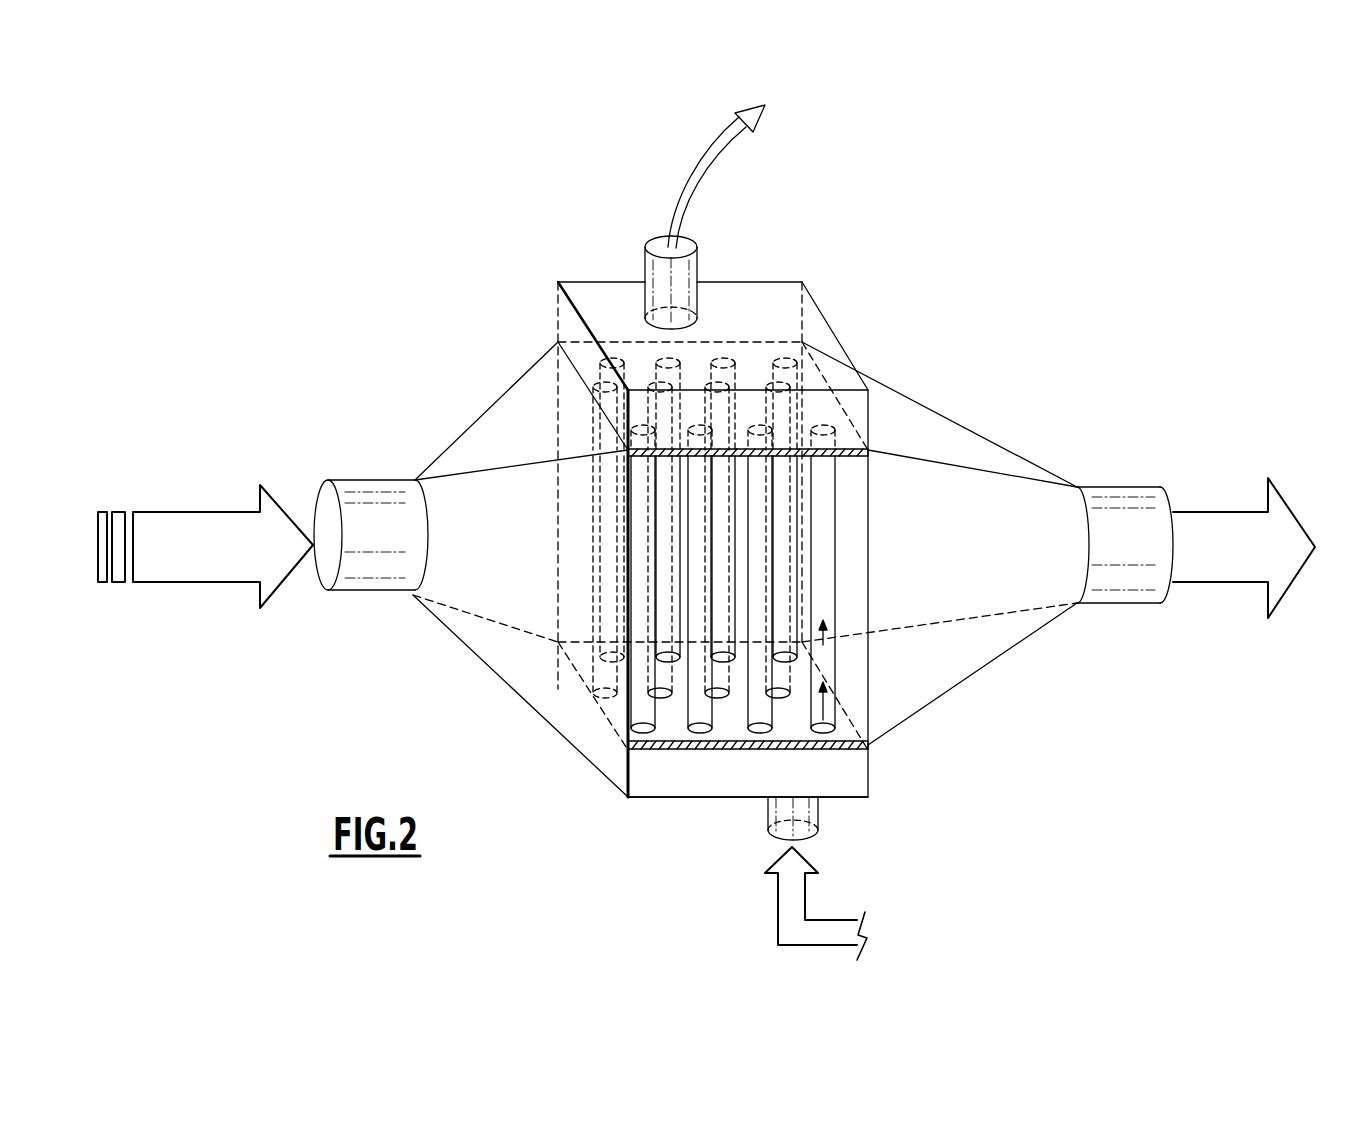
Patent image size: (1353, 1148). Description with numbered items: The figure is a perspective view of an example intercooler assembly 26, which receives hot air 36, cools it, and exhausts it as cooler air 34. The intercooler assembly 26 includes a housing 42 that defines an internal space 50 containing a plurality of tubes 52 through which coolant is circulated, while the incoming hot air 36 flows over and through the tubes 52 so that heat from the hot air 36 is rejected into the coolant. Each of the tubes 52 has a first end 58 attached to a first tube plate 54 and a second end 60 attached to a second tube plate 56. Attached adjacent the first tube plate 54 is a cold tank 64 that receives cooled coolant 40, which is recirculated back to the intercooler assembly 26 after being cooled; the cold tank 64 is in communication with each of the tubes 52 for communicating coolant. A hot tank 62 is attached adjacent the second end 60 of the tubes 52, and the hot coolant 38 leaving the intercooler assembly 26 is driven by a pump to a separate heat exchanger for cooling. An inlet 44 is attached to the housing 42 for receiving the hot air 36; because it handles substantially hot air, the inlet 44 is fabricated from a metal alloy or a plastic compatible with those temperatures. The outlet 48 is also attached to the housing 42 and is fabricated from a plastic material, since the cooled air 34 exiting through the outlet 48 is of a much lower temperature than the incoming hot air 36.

The intercooler assembly 26 is at (996, 212).
The cooler air 34 is at (1228, 525).
The hot air 36 is at (204, 520).
The hot coolant 38 is at (706, 170).
The cooled coolant 40 is at (798, 906).
The housing 42 is at (880, 592).
The inlet 44 is at (493, 603).
The outlet 48 is at (987, 593).
The internal space 50 is at (850, 561).
The tubes 52 is at (757, 707).
The first tube plate 54 is at (661, 752).
The second tube plate 56 is at (858, 447).
The first end 58 is at (718, 748).
The second end 60 is at (700, 412).
The hot tank 62 is at (830, 336).
The cold tank 64 is at (830, 777).